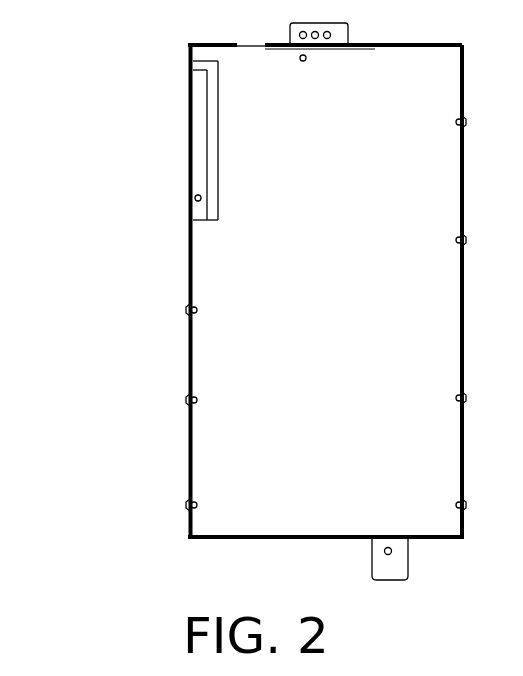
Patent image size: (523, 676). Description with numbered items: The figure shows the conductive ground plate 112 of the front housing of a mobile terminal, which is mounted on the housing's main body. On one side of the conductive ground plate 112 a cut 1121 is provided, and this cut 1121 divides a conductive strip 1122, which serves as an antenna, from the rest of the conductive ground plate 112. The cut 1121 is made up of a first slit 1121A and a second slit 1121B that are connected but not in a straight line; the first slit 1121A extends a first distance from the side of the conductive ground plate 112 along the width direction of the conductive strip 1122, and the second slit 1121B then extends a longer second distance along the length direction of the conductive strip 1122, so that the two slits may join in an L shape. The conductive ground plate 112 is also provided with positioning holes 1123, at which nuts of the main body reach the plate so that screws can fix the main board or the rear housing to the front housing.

The conductive ground plate 112 is at (267, 383).
The cut 1121 is at (123, 122).
The first slit 1121A is at (190, 62).
The second slit 1121B is at (213, 110).
The conductive strip 1122 is at (198, 170).
The positioning holes 1123 is at (185, 312).